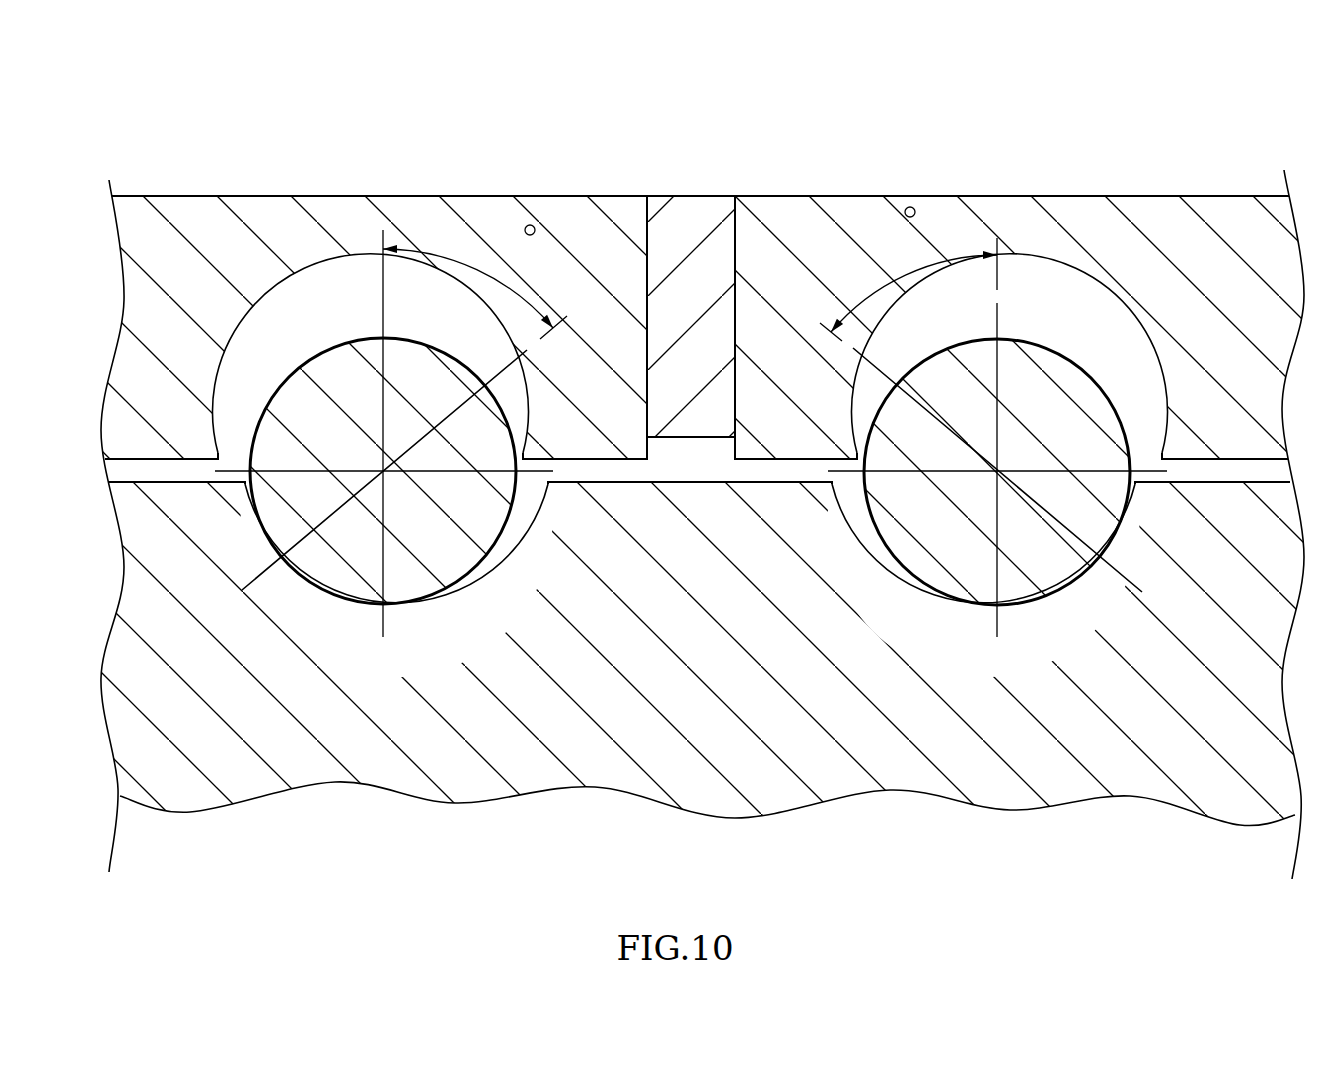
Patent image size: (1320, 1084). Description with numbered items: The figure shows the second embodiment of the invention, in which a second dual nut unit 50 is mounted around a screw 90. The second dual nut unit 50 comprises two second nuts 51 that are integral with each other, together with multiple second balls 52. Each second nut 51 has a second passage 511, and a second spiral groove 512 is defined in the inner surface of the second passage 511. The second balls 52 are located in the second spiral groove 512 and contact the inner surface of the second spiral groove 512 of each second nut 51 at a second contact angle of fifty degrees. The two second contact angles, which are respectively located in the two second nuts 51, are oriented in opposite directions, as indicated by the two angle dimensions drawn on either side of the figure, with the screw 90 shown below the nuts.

The second dual nut unit 50 is at (892, 135).
The second nut 51 is at (213, 230).
The second passage 511 is at (143, 472).
The second spiral groove 512 is at (240, 420).
The second ball 52 is at (435, 528).
The screw 90 is at (226, 780).